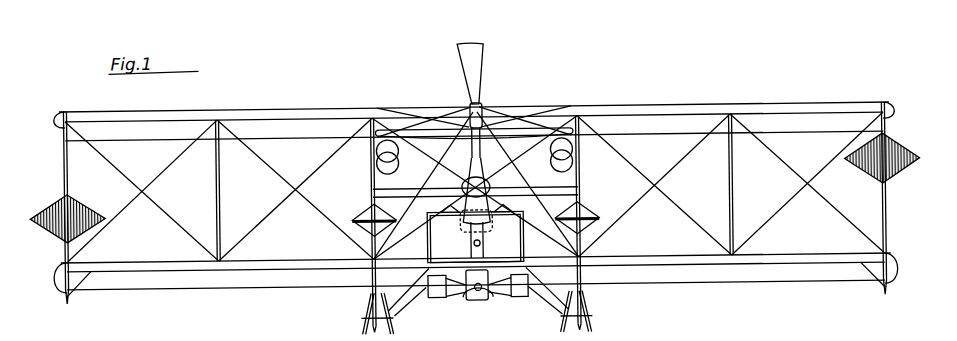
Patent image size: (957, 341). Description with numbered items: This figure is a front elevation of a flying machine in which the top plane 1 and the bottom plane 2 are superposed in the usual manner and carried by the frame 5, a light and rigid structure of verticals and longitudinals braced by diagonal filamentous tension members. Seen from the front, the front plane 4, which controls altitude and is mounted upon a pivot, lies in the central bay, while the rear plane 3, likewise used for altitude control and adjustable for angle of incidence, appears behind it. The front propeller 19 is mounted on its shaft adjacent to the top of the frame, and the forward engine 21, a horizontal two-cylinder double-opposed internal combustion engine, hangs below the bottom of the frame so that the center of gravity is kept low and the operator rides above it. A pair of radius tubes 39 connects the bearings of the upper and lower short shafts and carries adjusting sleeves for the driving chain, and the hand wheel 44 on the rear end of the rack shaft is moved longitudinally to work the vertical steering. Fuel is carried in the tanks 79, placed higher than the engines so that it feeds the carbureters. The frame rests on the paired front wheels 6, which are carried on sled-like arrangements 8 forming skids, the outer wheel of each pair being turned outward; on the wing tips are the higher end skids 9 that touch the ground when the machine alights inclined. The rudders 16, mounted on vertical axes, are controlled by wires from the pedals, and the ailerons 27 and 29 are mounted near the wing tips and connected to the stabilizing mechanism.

The top plane 1 is at (473, 111).
The bottom plane 2 is at (476, 265).
The rear plane 3 is at (560, 190).
The front plane 4 is at (525, 130).
The frame 5 is at (739, 184).
The front wheels 6 is at (375, 307).
The sled 8 is at (377, 305).
The skids 9 is at (477, 291).
The rudders 16 is at (368, 215).
The front propeller 19 is at (472, 77).
The forward engine 21 is at (463, 290).
The aileron 27 is at (904, 145).
The aileron 29 is at (68, 229).
The radius tubes 39 is at (463, 245).
The hand wheel 44 is at (463, 179).
The fuel tanks 79 is at (380, 160).